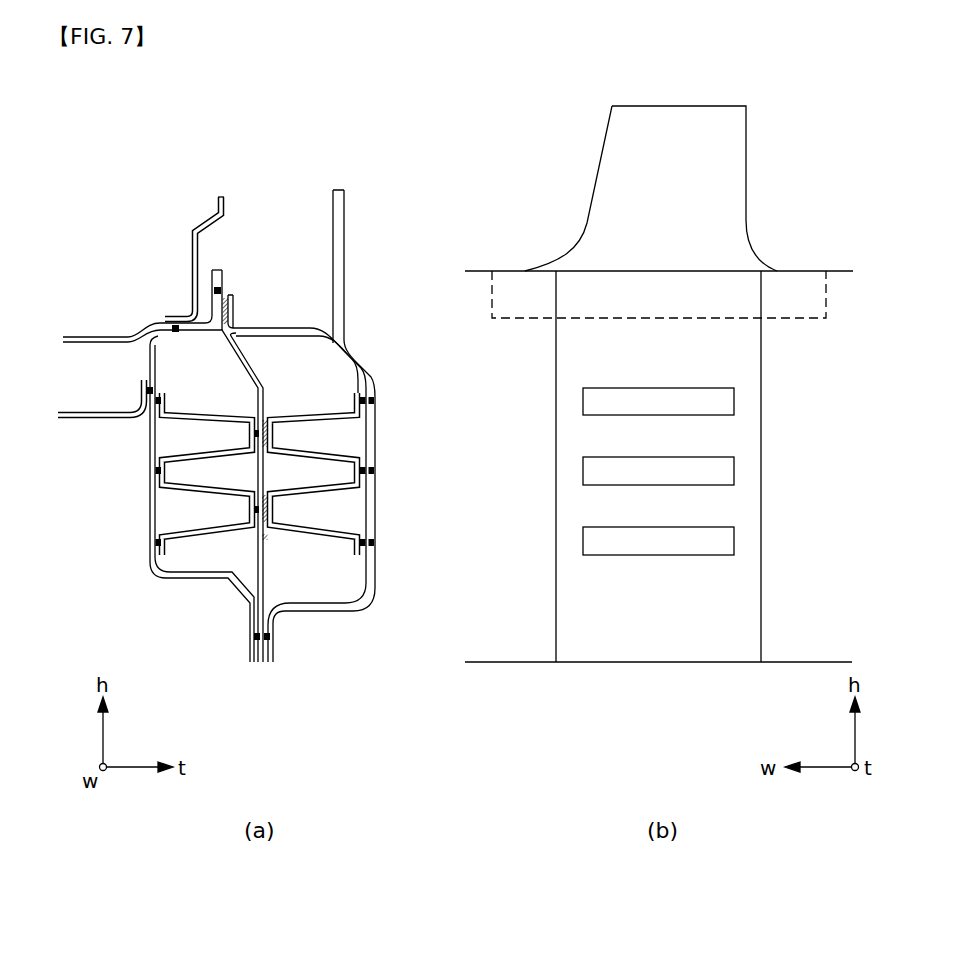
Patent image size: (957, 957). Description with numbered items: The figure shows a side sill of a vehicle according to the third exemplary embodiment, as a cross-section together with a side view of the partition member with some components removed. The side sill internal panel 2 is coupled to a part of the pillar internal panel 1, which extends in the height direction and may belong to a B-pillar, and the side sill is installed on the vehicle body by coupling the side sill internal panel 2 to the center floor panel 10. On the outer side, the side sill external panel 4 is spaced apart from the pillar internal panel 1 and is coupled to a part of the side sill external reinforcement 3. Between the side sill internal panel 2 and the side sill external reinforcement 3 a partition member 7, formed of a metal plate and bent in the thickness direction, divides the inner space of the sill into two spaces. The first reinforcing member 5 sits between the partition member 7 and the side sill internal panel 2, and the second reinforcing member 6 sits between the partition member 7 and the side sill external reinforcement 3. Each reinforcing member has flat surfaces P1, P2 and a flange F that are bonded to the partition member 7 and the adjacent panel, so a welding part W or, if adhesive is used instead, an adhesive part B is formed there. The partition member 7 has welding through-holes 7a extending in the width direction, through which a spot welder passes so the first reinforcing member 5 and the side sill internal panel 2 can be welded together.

The pillar internal panel 1 is at (200, 223).
The side sill internal panel 2 is at (152, 562).
The side sill external reinforcement 3 is at (300, 333).
The side sill external panel 4 is at (376, 372).
The first reinforcing member 5 is at (202, 533).
The second reinforcing member 6 is at (313, 533).
The partition member 7 is at (243, 357).
The welding through-hole 7a is at (258, 537).
The center floor panel 10 is at (75, 418).
The adhesive part B is at (266, 418).
The welding part W is at (363, 413).
The flange F is at (350, 556).
The first flat surface P1 is at (178, 470).
The second flat surface P2 is at (250, 430).